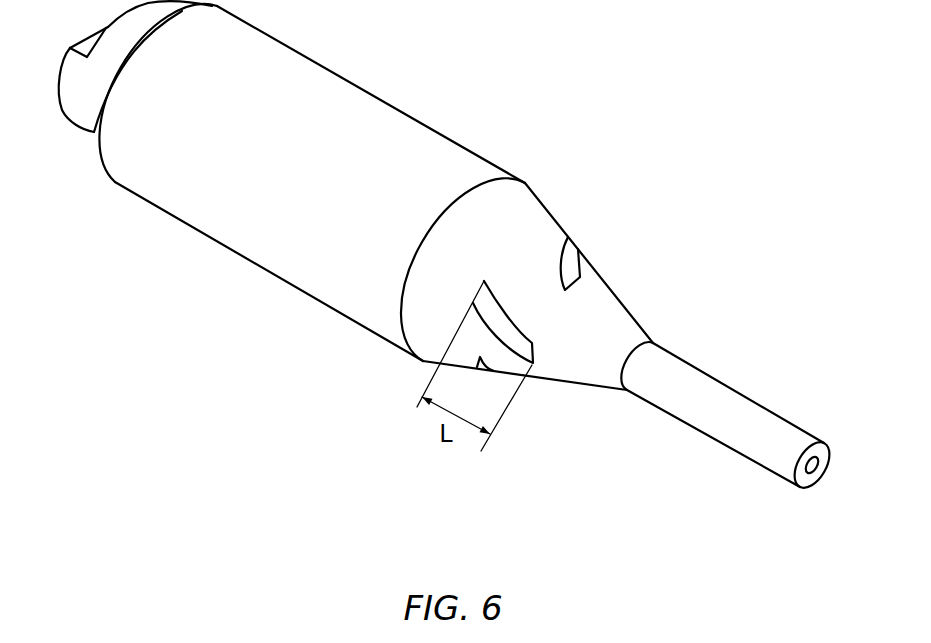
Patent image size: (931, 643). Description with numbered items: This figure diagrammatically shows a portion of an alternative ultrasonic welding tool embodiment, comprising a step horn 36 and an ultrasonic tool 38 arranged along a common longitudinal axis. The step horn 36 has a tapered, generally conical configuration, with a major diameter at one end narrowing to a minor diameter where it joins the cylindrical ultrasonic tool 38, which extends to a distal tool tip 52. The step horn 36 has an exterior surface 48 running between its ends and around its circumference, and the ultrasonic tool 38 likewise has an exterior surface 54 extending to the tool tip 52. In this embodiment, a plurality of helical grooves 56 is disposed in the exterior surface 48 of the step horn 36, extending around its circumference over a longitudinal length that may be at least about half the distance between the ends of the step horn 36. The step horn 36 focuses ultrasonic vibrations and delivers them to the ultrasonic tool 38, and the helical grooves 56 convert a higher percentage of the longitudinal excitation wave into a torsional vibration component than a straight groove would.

The step horn 36 is at (563, 194).
The ultrasonic tool 38 is at (733, 440).
The exterior surface 48 is at (515, 201).
The tool tip 52 is at (816, 479).
The exterior surface 54 is at (713, 441).
The helical grooves 56 is at (533, 344).